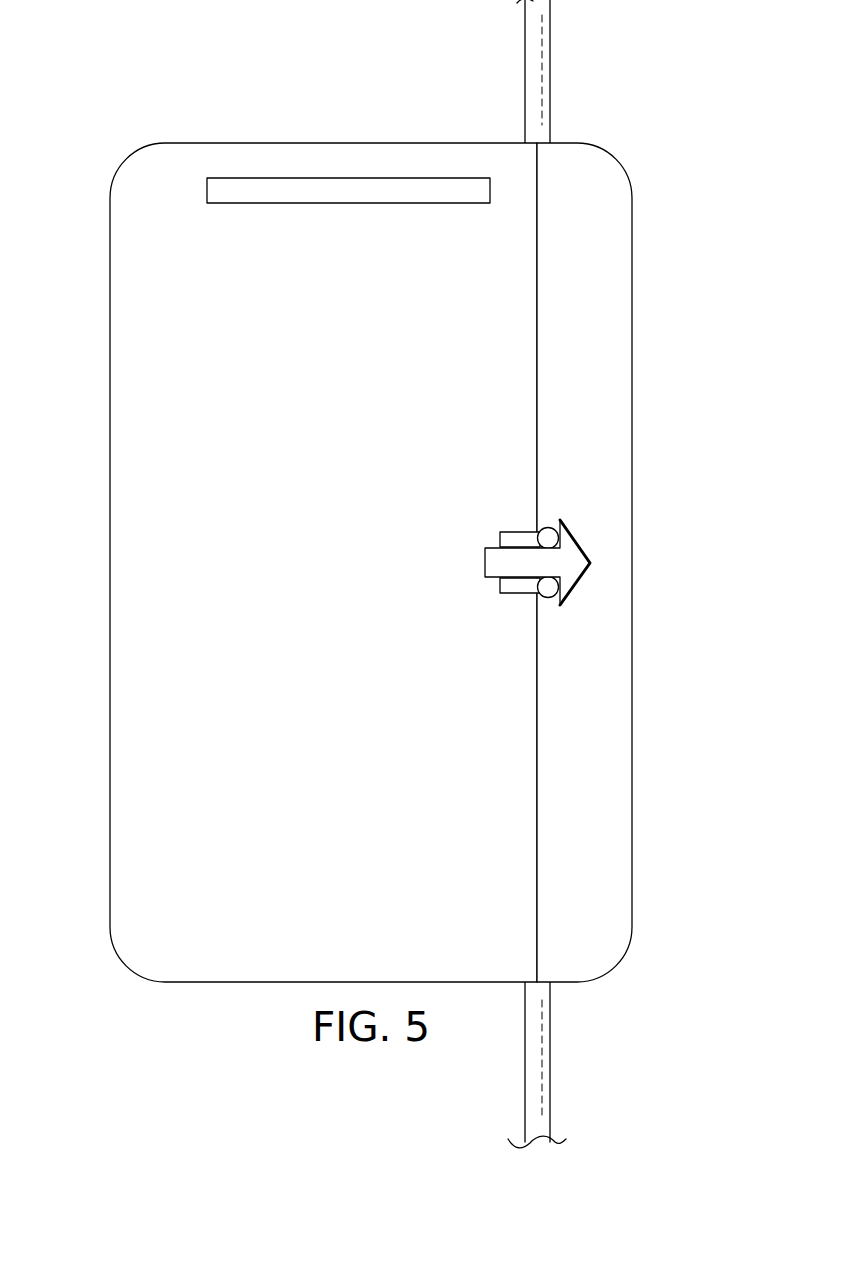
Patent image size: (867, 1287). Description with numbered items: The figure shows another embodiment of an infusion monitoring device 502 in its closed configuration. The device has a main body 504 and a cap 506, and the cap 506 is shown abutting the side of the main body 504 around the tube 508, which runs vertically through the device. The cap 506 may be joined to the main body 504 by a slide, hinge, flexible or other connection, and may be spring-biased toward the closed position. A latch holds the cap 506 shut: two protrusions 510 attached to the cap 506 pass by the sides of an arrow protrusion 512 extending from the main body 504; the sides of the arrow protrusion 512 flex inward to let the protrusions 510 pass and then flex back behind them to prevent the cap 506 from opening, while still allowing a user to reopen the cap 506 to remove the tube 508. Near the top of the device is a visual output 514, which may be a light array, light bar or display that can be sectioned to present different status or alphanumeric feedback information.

The infusion monitoring device 502 is at (371, 574).
The main body 504 is at (120, 560).
The cap 506 is at (622, 360).
The tube 508 is at (551, 68).
The protrusions 510 is at (515, 532).
The arrow protrusion 512 is at (485, 560).
The visual output 514 is at (341, 205).